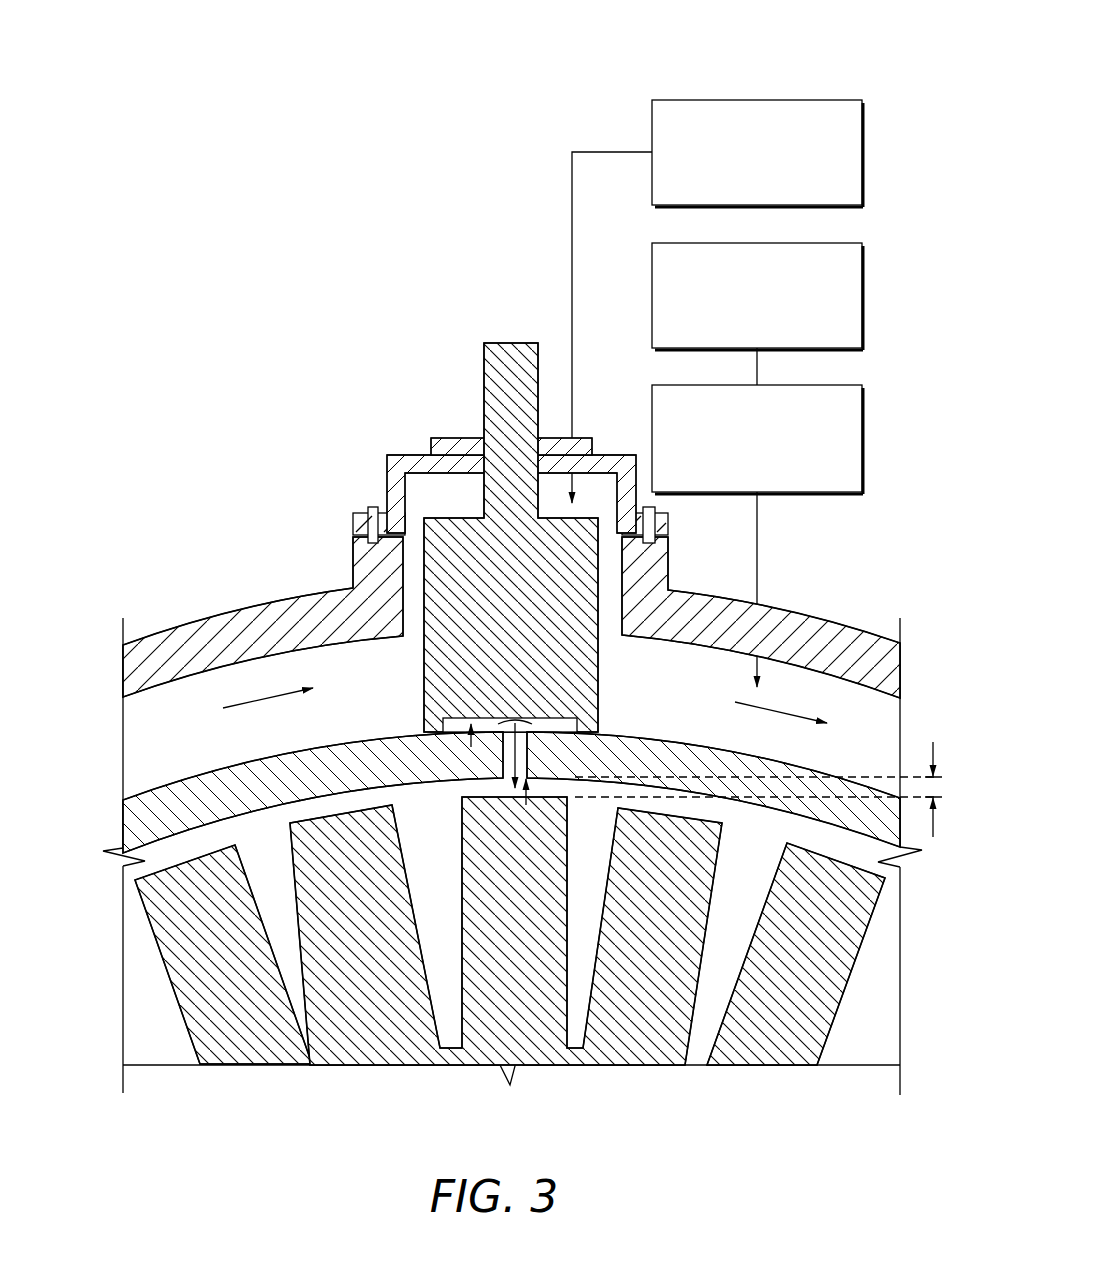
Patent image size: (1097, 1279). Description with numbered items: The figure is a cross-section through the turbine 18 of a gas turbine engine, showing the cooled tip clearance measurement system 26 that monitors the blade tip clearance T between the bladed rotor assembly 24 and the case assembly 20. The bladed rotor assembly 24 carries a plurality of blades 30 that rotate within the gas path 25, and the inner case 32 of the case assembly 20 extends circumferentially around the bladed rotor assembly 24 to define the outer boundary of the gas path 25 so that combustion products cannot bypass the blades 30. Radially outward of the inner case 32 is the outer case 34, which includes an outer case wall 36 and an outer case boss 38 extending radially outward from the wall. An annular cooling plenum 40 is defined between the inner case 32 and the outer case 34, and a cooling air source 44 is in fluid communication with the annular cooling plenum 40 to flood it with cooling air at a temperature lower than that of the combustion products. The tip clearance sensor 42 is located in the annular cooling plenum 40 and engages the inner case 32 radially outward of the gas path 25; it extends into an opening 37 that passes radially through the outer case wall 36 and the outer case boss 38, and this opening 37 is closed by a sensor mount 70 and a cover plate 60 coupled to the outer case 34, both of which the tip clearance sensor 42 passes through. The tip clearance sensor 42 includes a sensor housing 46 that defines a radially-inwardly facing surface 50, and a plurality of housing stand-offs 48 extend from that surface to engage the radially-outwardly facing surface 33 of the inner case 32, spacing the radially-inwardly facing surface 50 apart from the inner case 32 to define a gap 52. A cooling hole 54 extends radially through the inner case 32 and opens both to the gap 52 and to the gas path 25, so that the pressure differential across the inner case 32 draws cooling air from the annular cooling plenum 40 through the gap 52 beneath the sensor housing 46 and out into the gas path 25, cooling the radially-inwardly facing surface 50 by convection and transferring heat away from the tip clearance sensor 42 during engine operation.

The turbine 18 is at (112, 125).
The case assembly 20 is at (72, 657).
The bladed rotor assembly 24 is at (480, 956).
The gas path 25 is at (418, 830).
The cooled tip clearance measurement system 26 is at (878, 358).
The blades 30 is at (353, 957).
The inner case 32 is at (138, 788).
The radially-outwardly facing surface 33 is at (207, 772).
The outer case 34 is at (278, 553).
The outer case wall 36 is at (233, 605).
The opening 37 is at (406, 614).
The outer case boss 38 is at (350, 563).
The annular cooling plenum 40 is at (807, 385).
The tip clearance sensor 42 is at (807, 100).
The cooling air source 44 is at (807, 243).
The sensor housing 46 is at (604, 597).
The housing stand-offs 48 is at (417, 725).
The radially-inwardly facing surface 50 is at (560, 732).
The gap 52 is at (471, 747).
The cooling hole 54 is at (526, 805).
The cover plate 60 is at (465, 426).
The sensor mount 70 is at (405, 450).
The blade tip clearance T is at (934, 742).